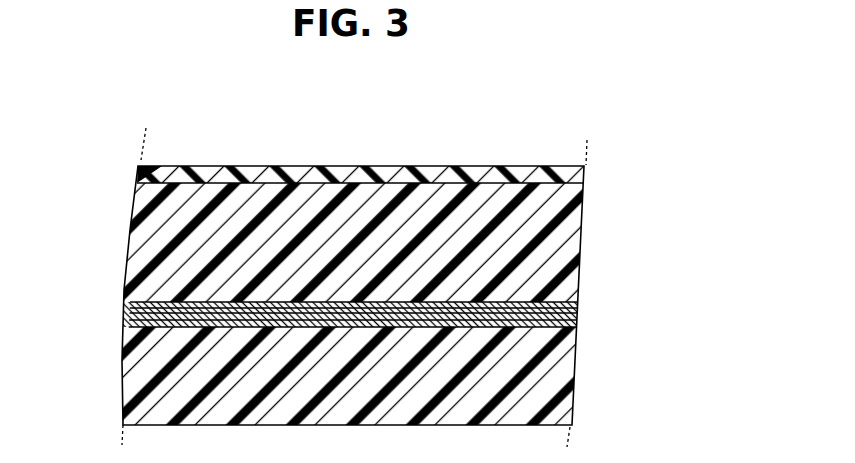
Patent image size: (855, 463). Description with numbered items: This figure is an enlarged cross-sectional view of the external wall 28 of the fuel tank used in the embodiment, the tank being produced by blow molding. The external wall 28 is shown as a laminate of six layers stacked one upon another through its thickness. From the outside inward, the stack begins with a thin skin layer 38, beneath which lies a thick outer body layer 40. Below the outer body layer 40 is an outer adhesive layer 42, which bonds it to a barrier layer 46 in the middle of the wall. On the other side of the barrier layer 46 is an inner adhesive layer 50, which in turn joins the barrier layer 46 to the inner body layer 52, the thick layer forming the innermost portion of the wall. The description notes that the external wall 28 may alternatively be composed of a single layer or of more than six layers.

The external wall 28 is at (390, 255).
The skin layer 38 is at (413, 158).
The outer body layer 40 is at (413, 242).
The outer adhesive layer 42 is at (412, 280).
The barrier layer 46 is at (408, 327).
The inner adhesive layer 50 is at (408, 359).
The inner body layer 52 is at (407, 392).